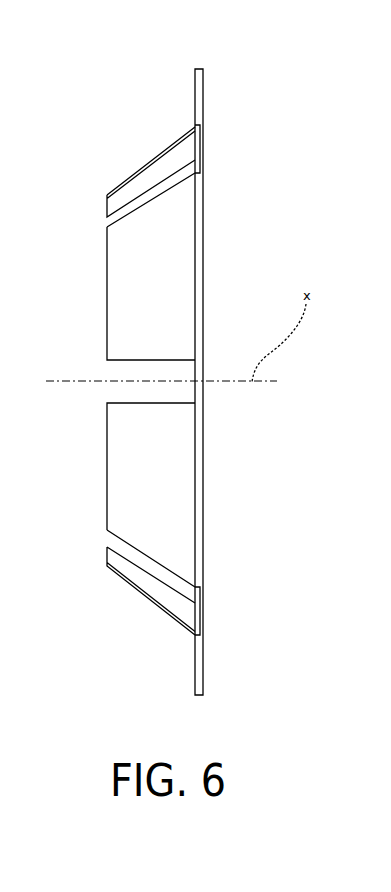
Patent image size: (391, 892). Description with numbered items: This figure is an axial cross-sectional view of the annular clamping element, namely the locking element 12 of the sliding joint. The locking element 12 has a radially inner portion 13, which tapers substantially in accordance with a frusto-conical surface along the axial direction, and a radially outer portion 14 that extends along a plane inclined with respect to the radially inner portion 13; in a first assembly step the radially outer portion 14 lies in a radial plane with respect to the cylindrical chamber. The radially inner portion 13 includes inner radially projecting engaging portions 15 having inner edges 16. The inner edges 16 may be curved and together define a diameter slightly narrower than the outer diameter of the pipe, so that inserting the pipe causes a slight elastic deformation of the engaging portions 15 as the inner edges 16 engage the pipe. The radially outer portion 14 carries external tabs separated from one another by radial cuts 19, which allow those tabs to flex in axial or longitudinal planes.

The locking element 12 is at (124, 151).
The radially inner portion 13 is at (178, 137).
The radially outer portion 14 is at (204, 667).
The inner radially projecting engaging portions 15 is at (140, 312).
The inner edges 16 is at (107, 497).
The radial cuts 19 is at (204, 100).